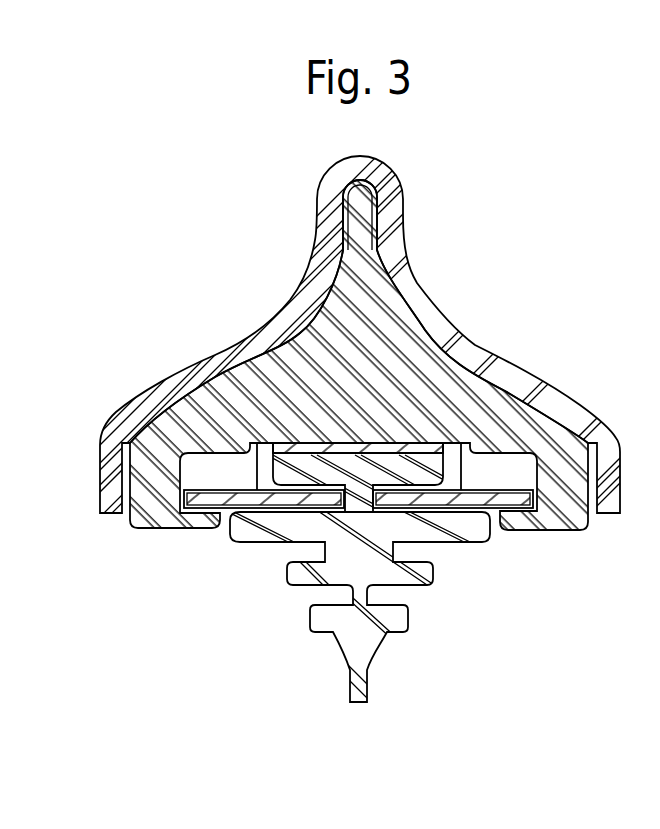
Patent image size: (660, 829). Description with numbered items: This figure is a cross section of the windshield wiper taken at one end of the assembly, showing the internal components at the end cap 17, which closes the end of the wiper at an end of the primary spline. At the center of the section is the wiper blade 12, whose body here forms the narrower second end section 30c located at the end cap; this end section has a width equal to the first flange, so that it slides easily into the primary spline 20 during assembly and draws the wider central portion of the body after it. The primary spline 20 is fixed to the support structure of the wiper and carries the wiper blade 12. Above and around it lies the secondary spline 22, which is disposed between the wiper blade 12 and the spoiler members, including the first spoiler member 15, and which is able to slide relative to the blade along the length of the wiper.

The end cap 17 is at (397, 257).
The first spoiler member 15 is at (420, 370).
The second end section 30c is at (398, 470).
The secondary spline 22 is at (308, 442).
The primary spline 20 is at (508, 500).
The wiper blade 12 is at (292, 575).